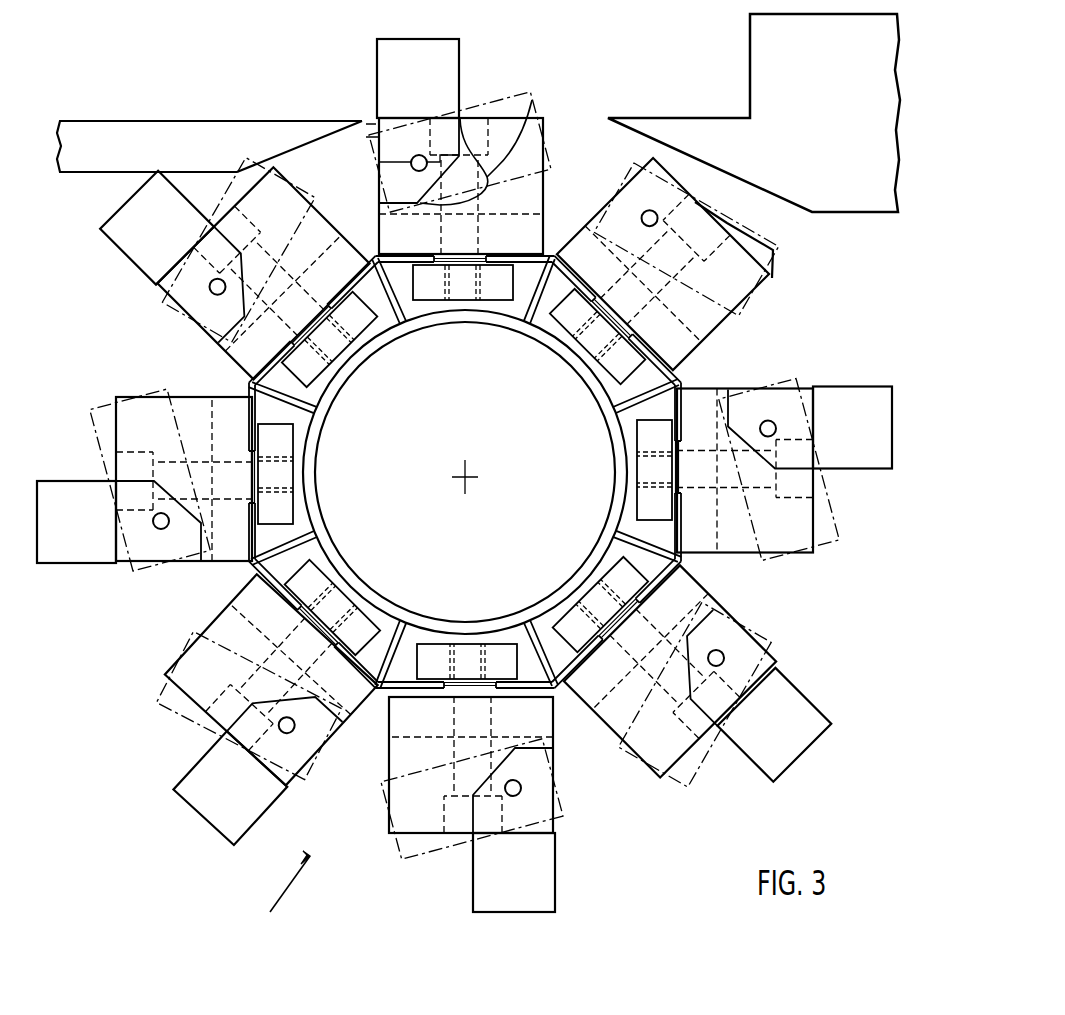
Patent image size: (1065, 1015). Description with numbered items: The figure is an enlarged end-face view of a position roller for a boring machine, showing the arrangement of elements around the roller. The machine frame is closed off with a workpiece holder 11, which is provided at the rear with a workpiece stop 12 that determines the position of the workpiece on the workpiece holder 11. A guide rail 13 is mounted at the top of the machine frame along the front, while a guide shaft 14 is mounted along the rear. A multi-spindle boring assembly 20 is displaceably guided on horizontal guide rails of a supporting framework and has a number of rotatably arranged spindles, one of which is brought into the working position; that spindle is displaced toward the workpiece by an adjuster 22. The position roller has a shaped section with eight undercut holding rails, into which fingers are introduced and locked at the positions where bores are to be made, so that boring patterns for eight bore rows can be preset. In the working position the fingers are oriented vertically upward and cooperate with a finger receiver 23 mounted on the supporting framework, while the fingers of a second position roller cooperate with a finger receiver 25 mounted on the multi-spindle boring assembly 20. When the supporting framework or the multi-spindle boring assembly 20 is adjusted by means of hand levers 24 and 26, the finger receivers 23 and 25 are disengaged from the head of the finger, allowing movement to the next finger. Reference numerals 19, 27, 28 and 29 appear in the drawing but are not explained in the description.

The workpiece holder 11 is at (215, 135).
The workpiece stop 12 is at (320, 117).
The guide rail 13 is at (368, 115).
The guide shaft 14 is at (767, 63).
The processing station 19 is at (700, 348).
The multi-spindle boring assembly 20 is at (280, 900).
The adjuster 22 is at (474, 474).
The finger receiver 23 is at (337, 390).
The hand lever 24 is at (250, 547).
The finger receiver 25 is at (532, 222).
The hand lever 26 is at (497, 287).
The tool block 27 is at (447, 60).
The lever 28 is at (532, 100).
The pivot pin 29 is at (380, 166).